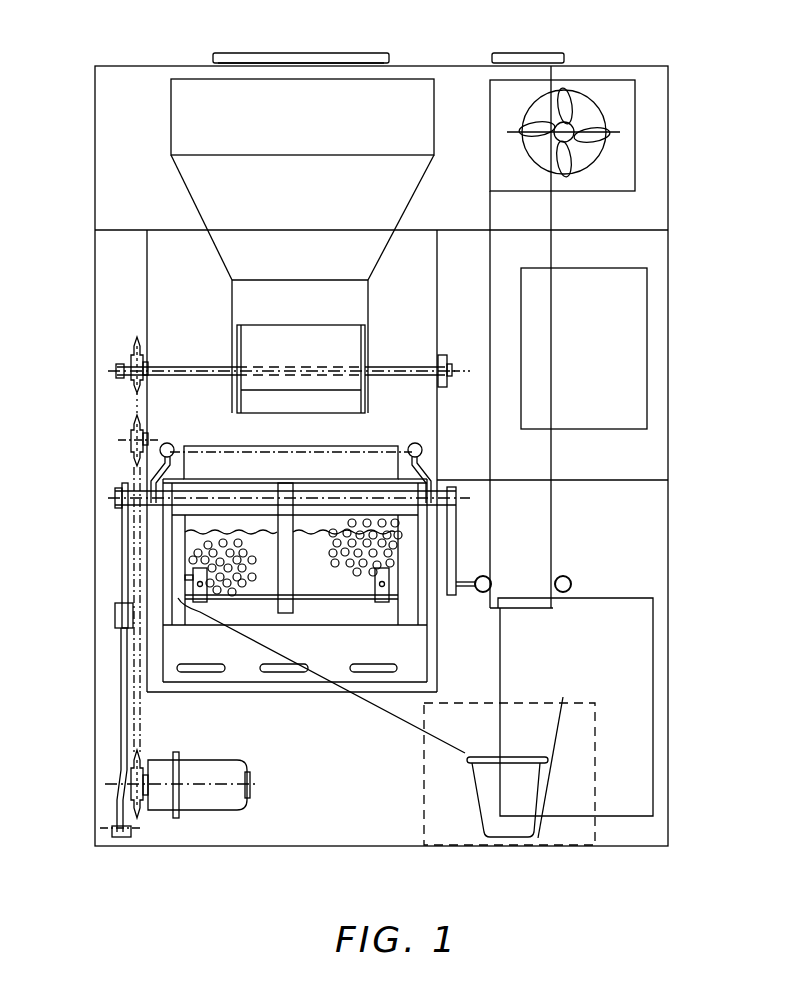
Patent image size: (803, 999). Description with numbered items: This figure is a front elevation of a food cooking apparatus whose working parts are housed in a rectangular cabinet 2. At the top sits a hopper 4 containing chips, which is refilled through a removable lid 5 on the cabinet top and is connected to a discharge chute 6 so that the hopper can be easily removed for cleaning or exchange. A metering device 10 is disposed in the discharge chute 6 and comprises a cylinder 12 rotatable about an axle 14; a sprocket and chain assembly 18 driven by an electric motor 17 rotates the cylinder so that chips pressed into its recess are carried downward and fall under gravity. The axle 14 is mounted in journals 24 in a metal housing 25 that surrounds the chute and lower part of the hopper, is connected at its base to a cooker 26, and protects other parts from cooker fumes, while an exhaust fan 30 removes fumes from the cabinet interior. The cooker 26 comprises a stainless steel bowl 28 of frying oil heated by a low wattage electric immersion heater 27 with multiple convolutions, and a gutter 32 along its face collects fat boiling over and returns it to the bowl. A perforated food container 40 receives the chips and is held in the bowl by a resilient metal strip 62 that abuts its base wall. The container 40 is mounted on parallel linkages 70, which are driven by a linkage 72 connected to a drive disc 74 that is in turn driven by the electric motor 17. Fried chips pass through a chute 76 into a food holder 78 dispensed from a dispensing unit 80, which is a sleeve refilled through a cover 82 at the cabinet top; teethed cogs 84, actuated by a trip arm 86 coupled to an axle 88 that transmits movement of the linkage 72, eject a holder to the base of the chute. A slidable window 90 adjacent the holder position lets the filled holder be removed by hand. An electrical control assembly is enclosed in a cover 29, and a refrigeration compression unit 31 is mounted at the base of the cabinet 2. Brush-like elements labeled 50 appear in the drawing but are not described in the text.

The cabinet 2 is at (118, 62).
The hopper 4 is at (190, 130).
The removable lid 5 is at (288, 58).
The discharge chute 6 is at (250, 298).
The metering device 10 is at (252, 346).
The cylinder 12 is at (348, 350).
The axle 14 is at (116, 376).
The electric motor 17 is at (210, 800).
The sprocket and chain assembly 18 is at (135, 402).
The journals 24 is at (146, 378).
The metal housing 25 is at (150, 258).
The cooker 26 is at (287, 693).
The electric immersion heater 27 is at (205, 670).
The bowl 28 is at (310, 600).
The cover 29 is at (635, 302).
The exhaust fan 30 is at (590, 118).
The refrigeration compression unit 31 is at (640, 622).
The gutter 32 is at (425, 512).
The food container 40 is at (358, 447).
The brush assembly 50 is at (190, 576).
The resilient metal strip 62 is at (280, 608).
The parallel linkages 70 is at (160, 470).
The linkage 72 is at (125, 670).
The drive disc 74 is at (131, 756).
The chute 76 is at (372, 712).
The food holder 78 is at (500, 828).
The dispensing unit 80 is at (535, 505).
The cover 82 is at (550, 52).
The teethed cogs 84 is at (569, 579).
The trip arm 86 is at (452, 570).
The axle 88 is at (442, 470).
The slidable window 90 is at (420, 815).